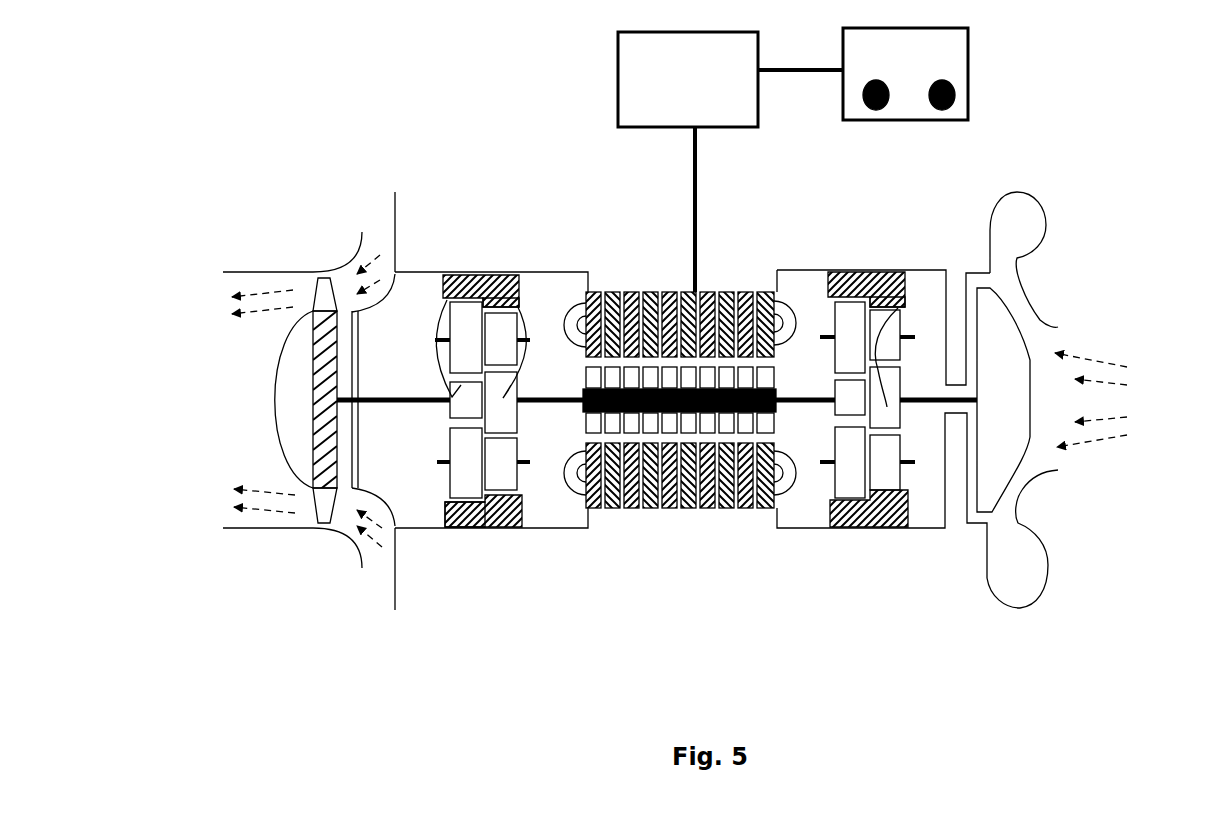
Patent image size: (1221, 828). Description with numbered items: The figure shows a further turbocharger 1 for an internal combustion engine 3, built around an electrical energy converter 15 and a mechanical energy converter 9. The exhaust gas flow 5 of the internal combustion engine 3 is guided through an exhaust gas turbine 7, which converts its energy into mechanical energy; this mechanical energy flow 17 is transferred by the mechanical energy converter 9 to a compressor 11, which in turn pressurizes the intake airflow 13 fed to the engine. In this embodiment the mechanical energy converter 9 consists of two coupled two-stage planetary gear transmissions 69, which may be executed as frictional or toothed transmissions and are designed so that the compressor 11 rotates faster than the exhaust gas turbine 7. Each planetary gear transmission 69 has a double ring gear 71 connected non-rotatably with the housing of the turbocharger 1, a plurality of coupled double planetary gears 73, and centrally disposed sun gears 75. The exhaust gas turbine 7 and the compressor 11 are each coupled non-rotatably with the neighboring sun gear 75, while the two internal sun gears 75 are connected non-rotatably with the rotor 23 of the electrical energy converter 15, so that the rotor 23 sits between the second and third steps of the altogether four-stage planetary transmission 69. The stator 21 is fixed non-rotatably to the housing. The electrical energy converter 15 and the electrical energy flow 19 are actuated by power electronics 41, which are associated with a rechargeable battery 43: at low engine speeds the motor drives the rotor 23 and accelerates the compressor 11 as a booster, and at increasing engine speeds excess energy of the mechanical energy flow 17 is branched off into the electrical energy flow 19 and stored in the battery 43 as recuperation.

The turbocharger 1 is at (252, 101).
The internal combustion engine 3 is at (1082, 241).
The exhaust gas flow 5 is at (206, 477).
The exhaust gas turbine 7 is at (300, 410).
The mechanical energy converter 9 is at (486, 538).
The compressor 11 is at (1010, 430).
The intake airflow 13 is at (1157, 387).
The electrical energy converter 15 is at (658, 290).
The mechanical energy flow 17 is at (386, 391).
The electrical energy flow 19 is at (808, 70).
The stator 21 is at (680, 508).
The rotor 23 is at (730, 428).
The power electronics 41 is at (640, 77).
The rechargeable battery 43 is at (947, 67).
The planetary gear transmission 69 is at (503, 395).
The double ring gear 71 is at (520, 283).
The double planetary gear 73 is at (470, 462).
The sun gear 75 is at (455, 275).